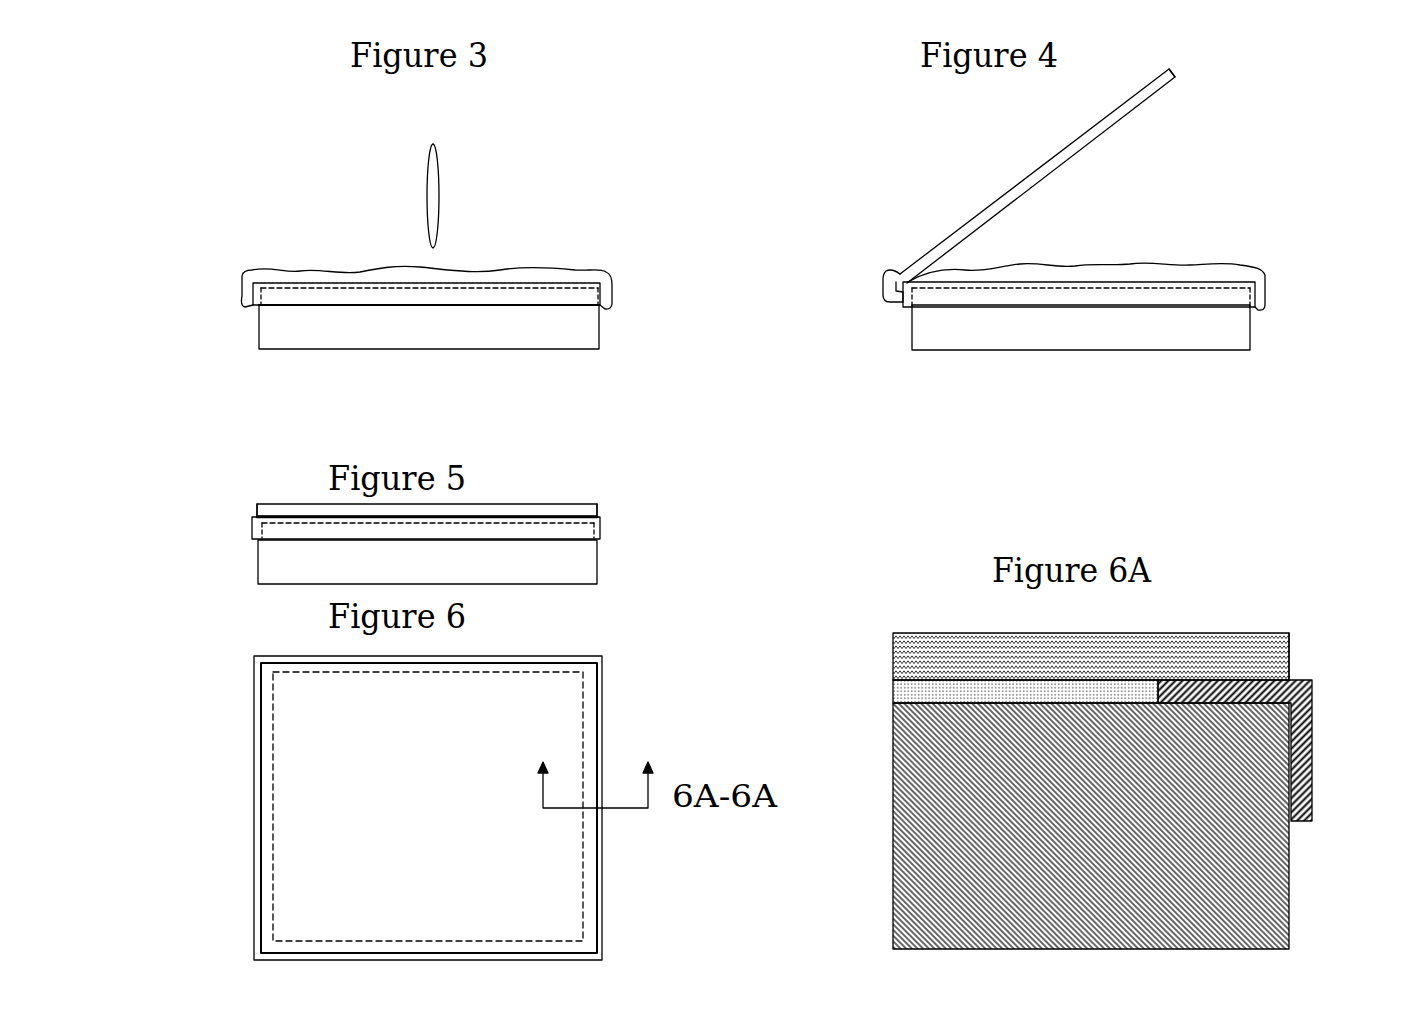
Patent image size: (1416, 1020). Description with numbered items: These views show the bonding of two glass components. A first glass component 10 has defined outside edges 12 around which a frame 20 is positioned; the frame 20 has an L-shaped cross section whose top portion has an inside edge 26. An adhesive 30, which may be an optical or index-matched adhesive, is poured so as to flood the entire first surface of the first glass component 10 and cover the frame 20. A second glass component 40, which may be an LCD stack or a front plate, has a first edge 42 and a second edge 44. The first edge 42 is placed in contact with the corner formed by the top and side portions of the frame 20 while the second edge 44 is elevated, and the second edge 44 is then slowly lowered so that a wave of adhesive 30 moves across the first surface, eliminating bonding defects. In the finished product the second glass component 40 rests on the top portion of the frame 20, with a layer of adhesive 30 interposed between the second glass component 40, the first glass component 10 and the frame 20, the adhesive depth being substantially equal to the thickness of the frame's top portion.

In FIG. 3, the first glass component 10 is at (288, 340).
In FIG. 4, the first glass component 10 is at (940, 342).
In FIG. 5, the first glass component 10 is at (577, 575).
In FIG. 6A, the first glass component 10 is at (915, 890).
In FIG. 3, the outside edges 12 is at (259, 303).
In FIG. 3, the frame 20 is at (620, 311).
In FIG. 4, the frame 20 is at (922, 298).
In FIG. 5, the frame 20 is at (273, 528).
In FIG. 6, the frame 20 is at (250, 690).
In FIG. 6A, the frame 20 is at (1323, 786).
In FIG. 6, the inside edge 26 is at (275, 820).
In FIG. 3, the adhesive 30 is at (517, 266).
In FIG. 4, the adhesive 30 is at (1160, 273).
In FIG. 6A, the adhesive 30 is at (893, 693).
In FIG. 4, the second glass component 40 is at (1023, 178).
In FIG. 5, the second glass component 40 is at (543, 504).
In FIG. 6, the second glass component 40 is at (288, 913).
In FIG. 6A, the second glass component 40 is at (927, 633).
In FIG. 4, the first edge 42 is at (883, 277).
In FIG. 5, the first edge 42 is at (257, 511).
In FIG. 6, the first edge 42 is at (260, 852).
In FIG. 4, the second edge 44 is at (1177, 74).
In FIG. 5, the second edge 44 is at (597, 512).
In FIG. 6, the second edge 44 is at (593, 880).
In FIG. 6A, the second edge 44 is at (1291, 643).